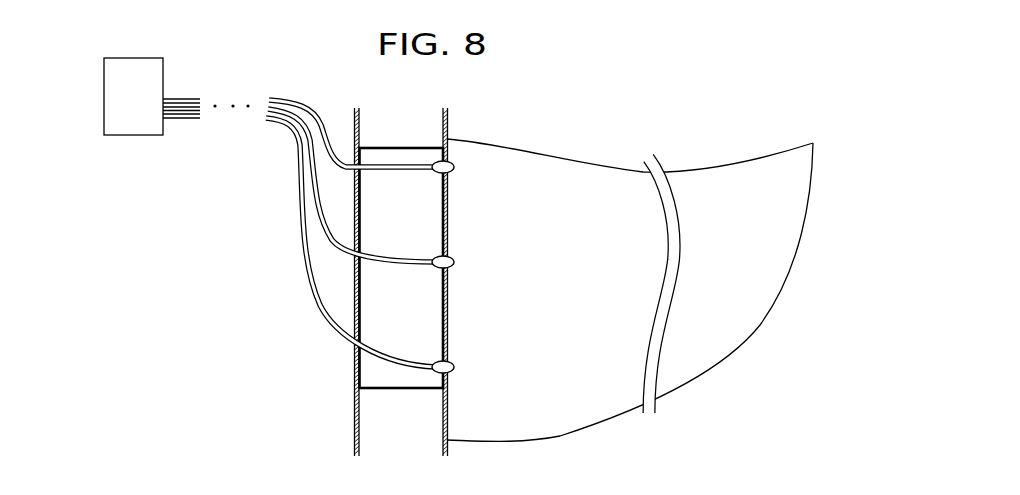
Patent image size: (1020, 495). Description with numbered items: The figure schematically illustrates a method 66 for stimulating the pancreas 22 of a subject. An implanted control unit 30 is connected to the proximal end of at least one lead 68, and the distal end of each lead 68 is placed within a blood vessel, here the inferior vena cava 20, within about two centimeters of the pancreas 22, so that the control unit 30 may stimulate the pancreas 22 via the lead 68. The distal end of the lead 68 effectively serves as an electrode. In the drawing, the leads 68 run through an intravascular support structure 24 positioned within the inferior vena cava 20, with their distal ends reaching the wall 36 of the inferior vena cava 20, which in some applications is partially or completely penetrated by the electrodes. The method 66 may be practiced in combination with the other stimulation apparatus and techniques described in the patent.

The control unit 30 is at (163, 65).
The inferior vena cava 20 is at (447, 124).
The intravascular support structure 24 is at (401, 147).
The lead 68 is at (400, 172).
The wall 36 is at (355, 430).
The pancreas 22 is at (678, 386).
The method 66 is at (299, 236).